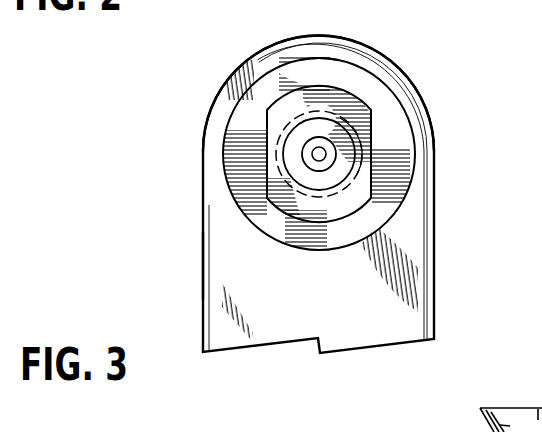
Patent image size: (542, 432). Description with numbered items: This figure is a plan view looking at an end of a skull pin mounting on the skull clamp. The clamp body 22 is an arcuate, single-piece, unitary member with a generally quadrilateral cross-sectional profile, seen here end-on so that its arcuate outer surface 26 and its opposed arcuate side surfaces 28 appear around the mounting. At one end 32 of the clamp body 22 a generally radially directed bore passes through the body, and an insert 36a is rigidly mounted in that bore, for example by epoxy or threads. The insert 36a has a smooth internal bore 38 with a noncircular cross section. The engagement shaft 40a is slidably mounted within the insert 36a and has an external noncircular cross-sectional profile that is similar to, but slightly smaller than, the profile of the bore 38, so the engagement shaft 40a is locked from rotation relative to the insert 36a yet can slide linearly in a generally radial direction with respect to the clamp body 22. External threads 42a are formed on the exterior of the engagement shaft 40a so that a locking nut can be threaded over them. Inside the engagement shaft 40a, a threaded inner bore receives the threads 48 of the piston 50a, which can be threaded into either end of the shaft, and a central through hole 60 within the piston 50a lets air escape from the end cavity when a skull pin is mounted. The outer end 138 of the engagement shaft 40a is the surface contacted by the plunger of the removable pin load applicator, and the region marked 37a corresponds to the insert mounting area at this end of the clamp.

The clamp body 22 is at (437, 268).
The outer surface 26 is at (331, 303).
The side surfaces 28 is at (204, 311).
The end 32 is at (204, 232).
The insert 36a is at (385, 82).
The bore 37a is at (322, 58).
The internal bore 38 is at (236, 198).
The engagement shaft 40a is at (373, 110).
The external threads 42a is at (351, 98).
The threads 48 is at (272, 157).
The piston 50a is at (277, 153).
The central through hole 60 is at (328, 154).
The outer end 138 is at (333, 177).